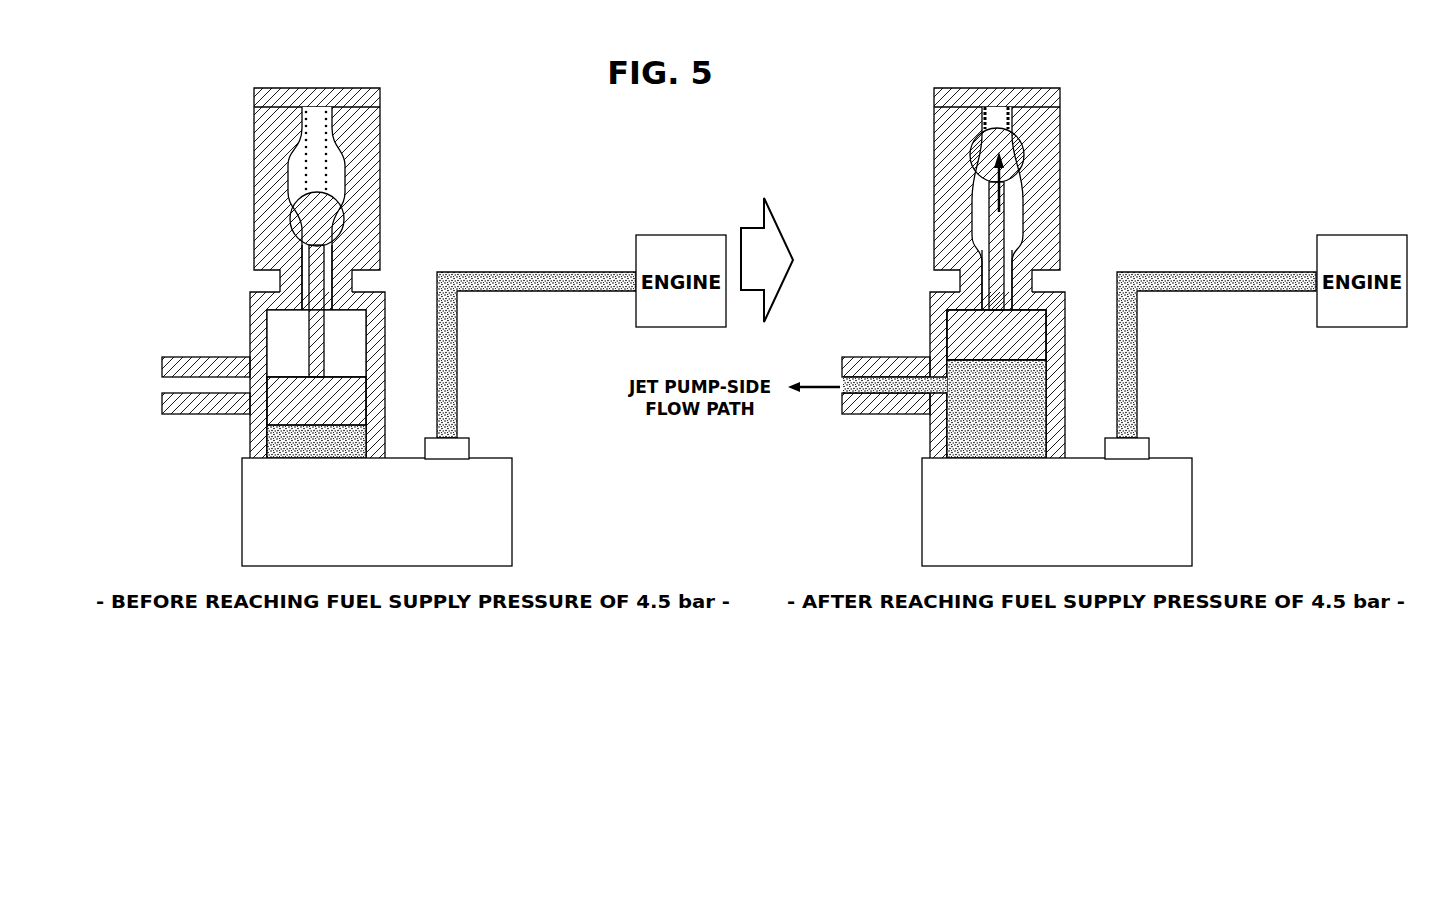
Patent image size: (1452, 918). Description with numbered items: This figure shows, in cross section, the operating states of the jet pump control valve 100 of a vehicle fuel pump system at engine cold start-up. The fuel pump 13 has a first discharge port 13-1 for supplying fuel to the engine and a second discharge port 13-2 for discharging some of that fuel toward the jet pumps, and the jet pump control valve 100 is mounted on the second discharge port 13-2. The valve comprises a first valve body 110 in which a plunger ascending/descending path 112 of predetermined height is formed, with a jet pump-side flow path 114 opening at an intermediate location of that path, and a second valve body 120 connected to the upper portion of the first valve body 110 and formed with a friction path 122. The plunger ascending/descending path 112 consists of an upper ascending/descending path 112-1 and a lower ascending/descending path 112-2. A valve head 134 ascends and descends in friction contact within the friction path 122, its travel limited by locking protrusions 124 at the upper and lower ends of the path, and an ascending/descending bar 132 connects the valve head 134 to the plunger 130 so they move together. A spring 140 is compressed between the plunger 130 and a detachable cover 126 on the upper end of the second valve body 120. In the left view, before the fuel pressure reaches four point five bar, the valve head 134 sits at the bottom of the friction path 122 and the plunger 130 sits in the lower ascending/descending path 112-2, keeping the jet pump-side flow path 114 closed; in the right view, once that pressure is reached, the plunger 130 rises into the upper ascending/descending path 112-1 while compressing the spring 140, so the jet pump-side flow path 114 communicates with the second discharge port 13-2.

The fuel pump 13 is at (512, 510).
The first discharge port 13-1 is at (469, 448).
The second discharge port 13-2 is at (270, 445).
The jet pump control valve 100 is at (681, 278).
The first valve body 110 is at (662, 338).
The plunger ascending/descending path 112 is at (743, 384).
The upper ascending/descending path 112-1 is at (360, 347).
The lower ascending/descending path 112-2 is at (362, 445).
The jet pump-side flow path 114 is at (190, 385).
The second valve body 120 is at (672, 186).
The friction path 122 is at (380, 208).
The locking protrusions 124 is at (298, 238).
The cover 126 is at (258, 103).
The plunger 130 is at (280, 415).
The ascending/descending bar 132 is at (316, 340).
The valve head 134 is at (300, 205).
The spring 140 is at (306, 148).